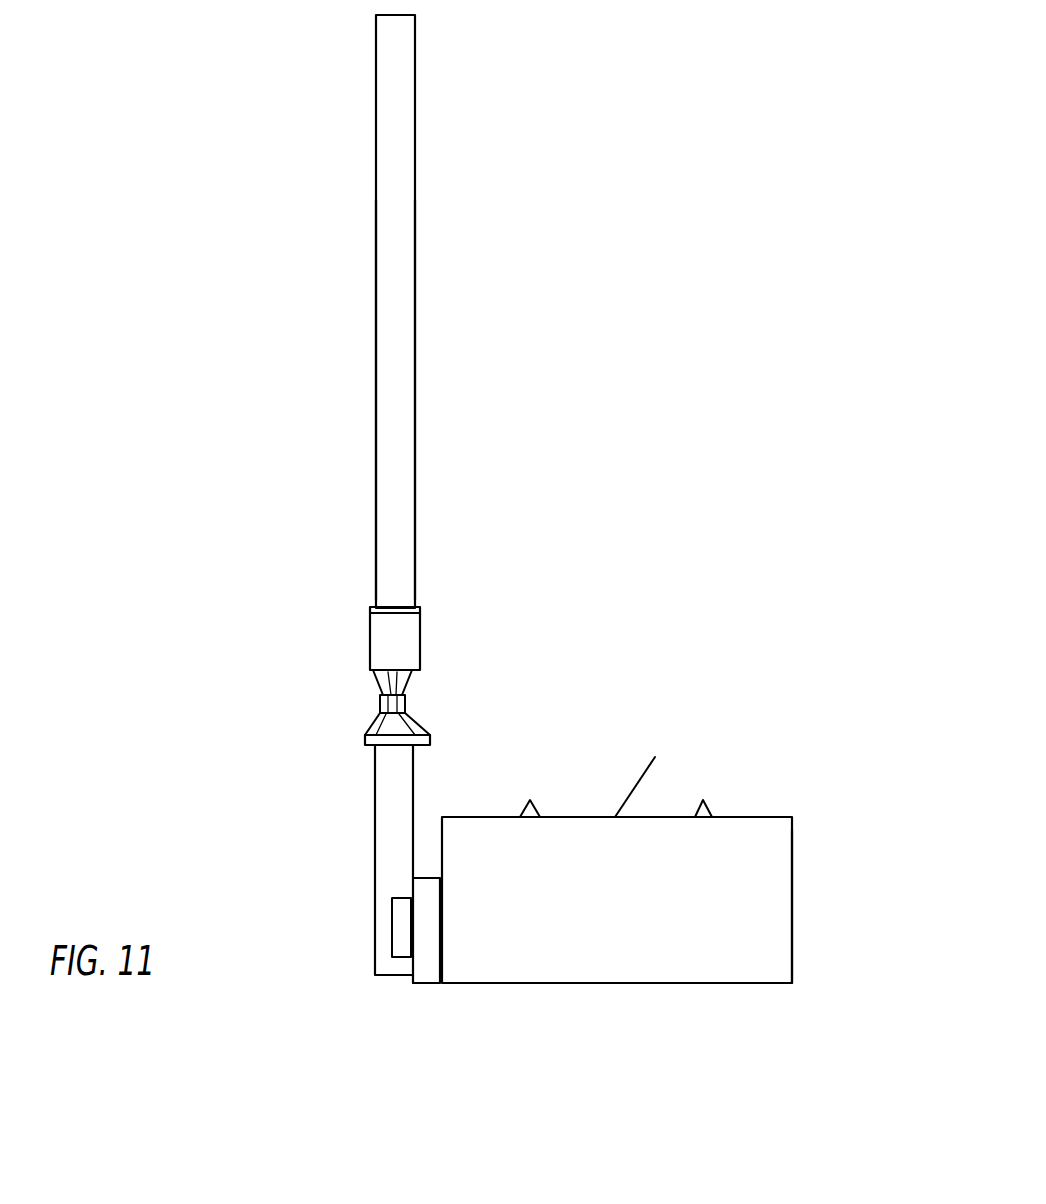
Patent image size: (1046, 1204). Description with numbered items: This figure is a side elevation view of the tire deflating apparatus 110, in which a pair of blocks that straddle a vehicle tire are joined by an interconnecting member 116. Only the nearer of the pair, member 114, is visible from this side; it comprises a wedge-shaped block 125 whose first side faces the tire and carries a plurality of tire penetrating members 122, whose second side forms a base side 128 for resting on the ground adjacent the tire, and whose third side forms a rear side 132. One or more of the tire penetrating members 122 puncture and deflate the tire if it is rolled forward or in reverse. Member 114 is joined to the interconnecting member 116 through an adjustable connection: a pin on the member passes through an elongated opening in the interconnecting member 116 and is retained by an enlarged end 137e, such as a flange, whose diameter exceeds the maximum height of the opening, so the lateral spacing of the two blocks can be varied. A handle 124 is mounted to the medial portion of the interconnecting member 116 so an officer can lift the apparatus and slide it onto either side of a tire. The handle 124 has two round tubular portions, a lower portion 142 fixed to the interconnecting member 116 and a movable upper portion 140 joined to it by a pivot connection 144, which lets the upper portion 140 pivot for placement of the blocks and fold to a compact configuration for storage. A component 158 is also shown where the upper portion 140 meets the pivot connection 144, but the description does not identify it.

The tire deflating apparatus 110 is at (783, 235).
The member 114 is at (788, 757).
The interconnecting member 116 is at (432, 963).
The tire penetrating members 122 is at (530, 800).
The handle 124 is at (400, 110).
The wedge-shaped block 125 is at (782, 848).
The base side 128 is at (746, 983).
The rear side 132 is at (600, 952).
The enlarged end 137e is at (397, 937).
The upper portion 140 is at (415, 418).
The lower portion 142 is at (383, 803).
The pivot connection 144 is at (373, 705).
The collar 158 is at (418, 603).